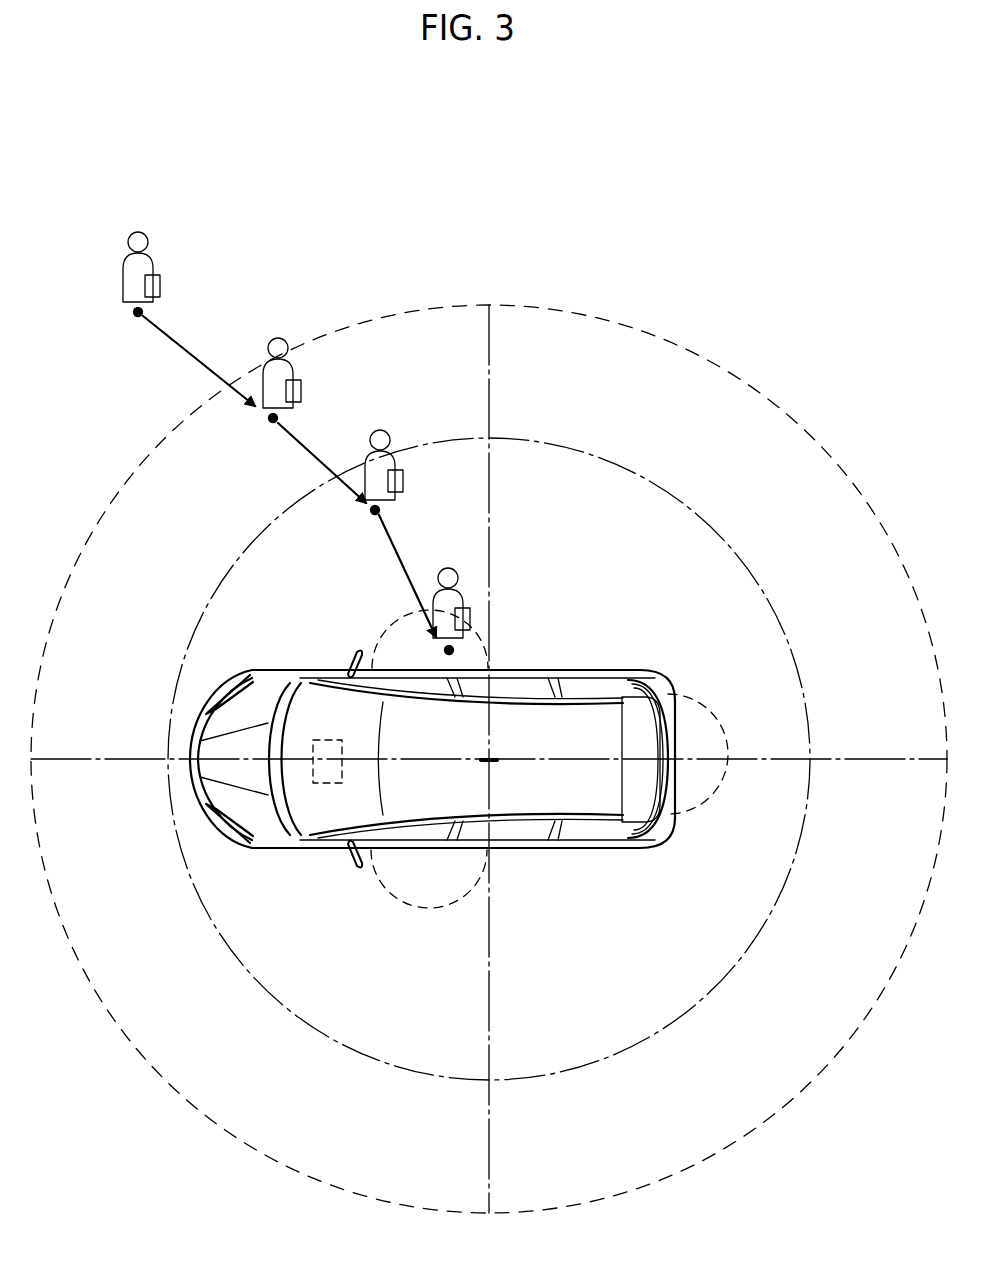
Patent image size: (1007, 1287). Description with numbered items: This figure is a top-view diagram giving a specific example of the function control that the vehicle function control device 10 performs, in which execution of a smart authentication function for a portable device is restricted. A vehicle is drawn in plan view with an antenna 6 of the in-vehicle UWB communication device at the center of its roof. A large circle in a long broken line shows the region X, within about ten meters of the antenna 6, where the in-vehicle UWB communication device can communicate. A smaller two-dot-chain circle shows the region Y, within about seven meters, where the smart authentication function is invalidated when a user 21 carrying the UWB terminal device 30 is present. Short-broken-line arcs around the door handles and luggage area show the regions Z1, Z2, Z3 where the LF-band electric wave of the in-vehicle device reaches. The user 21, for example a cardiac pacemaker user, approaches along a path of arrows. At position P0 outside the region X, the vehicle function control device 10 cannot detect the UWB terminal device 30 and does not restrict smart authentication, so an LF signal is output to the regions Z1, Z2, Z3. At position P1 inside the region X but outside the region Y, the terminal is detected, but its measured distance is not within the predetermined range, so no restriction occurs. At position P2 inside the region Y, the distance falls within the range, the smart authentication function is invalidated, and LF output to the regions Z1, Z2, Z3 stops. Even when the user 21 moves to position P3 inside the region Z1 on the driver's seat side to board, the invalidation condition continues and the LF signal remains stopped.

The vehicle function control device 10 is at (313, 783).
The user 21 is at (122, 265).
The UWB terminal device 30 is at (160, 274).
The antenna 6 is at (575, 839).
The region X is at (760, 383).
The region Y is at (722, 520).
The region Z1 is at (380, 640).
The region Z2 is at (480, 898).
The region Z3 is at (700, 695).
The position P0 is at (145, 312).
The position P1 is at (280, 418).
The position P2 is at (382, 511).
The position P3 is at (456, 650).